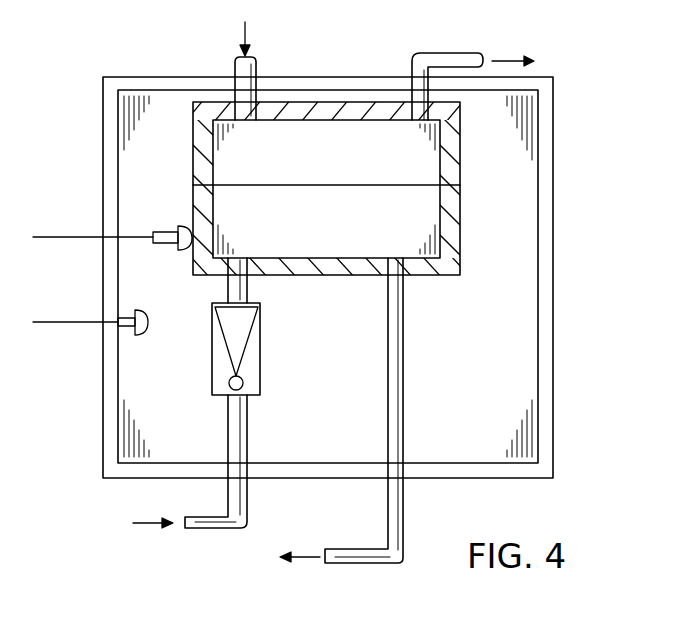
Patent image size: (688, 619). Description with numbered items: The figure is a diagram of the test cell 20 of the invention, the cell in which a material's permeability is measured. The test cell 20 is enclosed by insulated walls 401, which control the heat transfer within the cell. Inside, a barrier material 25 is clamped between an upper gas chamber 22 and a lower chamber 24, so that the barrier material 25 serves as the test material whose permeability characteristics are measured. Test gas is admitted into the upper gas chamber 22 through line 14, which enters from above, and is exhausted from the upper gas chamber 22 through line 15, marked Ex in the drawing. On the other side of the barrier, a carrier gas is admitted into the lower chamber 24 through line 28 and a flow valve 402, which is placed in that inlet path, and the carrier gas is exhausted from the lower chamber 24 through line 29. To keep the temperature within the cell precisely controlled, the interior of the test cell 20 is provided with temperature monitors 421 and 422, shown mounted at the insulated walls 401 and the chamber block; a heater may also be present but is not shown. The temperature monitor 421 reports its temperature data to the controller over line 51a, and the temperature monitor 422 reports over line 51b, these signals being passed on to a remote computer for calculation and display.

The line 14 is at (233, 70).
The line 15 is at (455, 52).
The test cell 20 is at (345, 75).
The upper gas chamber 22 is at (311, 164).
The lower chamber 24 is at (311, 228).
The barrier material 25 is at (362, 186).
The line 28 is at (212, 530).
The line 29 is at (368, 565).
The line 51a is at (70, 238).
The line 51b is at (70, 323).
The insulated walls 401 is at (553, 283).
The flow valve 402 is at (261, 355).
The temperature monitor 421 is at (186, 226).
The temperature monitor 422 is at (148, 336).